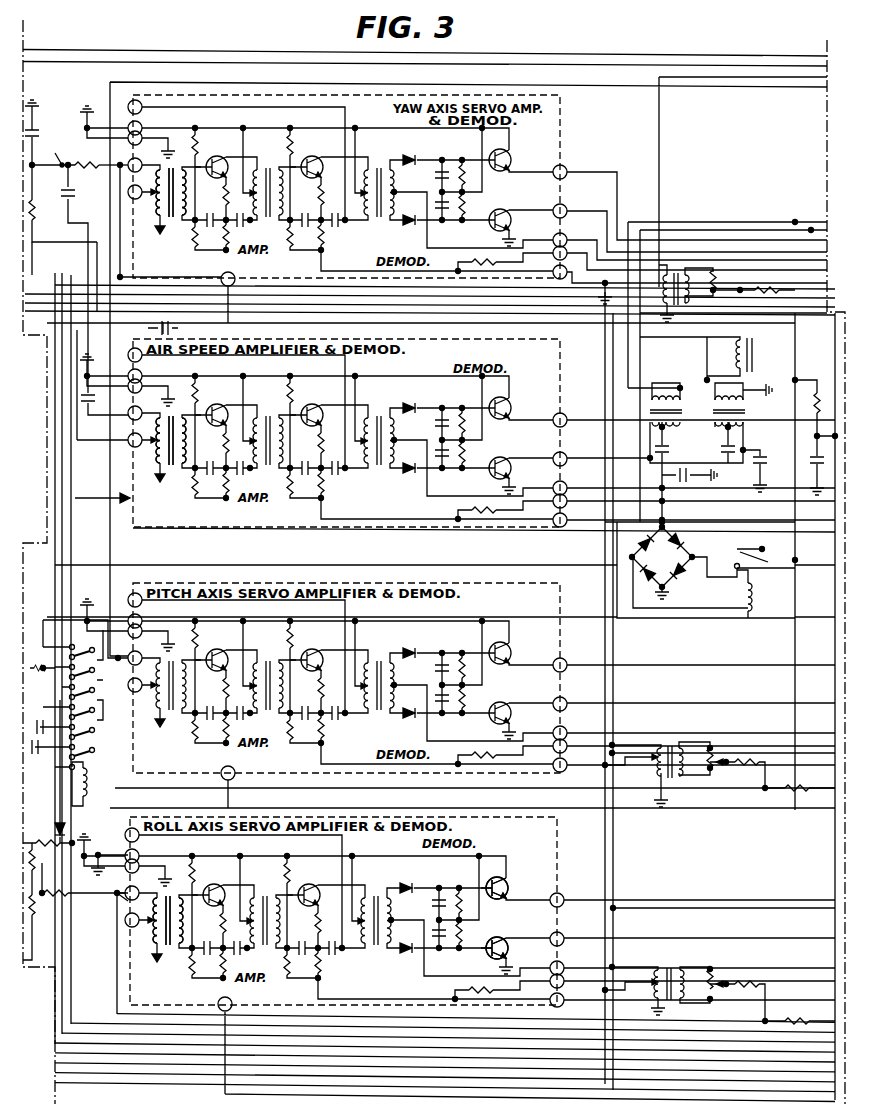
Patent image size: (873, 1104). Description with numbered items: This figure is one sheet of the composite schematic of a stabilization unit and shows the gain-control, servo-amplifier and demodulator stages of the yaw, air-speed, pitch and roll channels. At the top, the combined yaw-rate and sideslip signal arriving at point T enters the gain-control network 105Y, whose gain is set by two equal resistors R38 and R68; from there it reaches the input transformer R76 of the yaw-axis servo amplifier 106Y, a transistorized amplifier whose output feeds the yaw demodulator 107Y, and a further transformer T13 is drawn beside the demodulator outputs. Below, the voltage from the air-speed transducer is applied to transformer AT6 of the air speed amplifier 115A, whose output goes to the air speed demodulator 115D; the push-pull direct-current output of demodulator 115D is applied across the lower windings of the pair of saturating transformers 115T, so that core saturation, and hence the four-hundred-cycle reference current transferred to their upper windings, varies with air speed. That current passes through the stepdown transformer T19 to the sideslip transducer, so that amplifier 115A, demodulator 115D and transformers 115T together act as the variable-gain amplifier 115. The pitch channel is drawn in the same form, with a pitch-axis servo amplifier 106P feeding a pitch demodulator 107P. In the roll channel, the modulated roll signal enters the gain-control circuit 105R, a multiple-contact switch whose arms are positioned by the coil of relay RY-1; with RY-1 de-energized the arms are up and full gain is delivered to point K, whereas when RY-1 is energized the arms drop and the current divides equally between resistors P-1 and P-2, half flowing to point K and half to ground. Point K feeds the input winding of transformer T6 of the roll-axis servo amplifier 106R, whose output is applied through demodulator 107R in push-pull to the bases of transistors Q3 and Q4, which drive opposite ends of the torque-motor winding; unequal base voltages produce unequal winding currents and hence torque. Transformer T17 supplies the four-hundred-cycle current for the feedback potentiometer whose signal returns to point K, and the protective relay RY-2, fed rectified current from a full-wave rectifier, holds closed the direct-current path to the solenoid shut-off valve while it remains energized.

The yaw-axis servo amplifier 106Y is at (316, 189).
The yaw axis demodulator 107Y is at (465, 203).
The input transformer R76 is at (170, 185).
The resistor R68 is at (56, 201).
The resistor R38 is at (88, 162).
The point T is at (53, 155).
The gain-control network 105Y is at (91, 224).
The air speed amplifier 115A is at (316, 433).
The air speed demodulator 115D is at (465, 451).
The transformer AT6 is at (167, 434).
The variable-gain amplifier 115 is at (102, 490).
The airspeed saturating transformers 115T is at (700, 453).
The pitch axis servo amplifier 106P is at (316, 678).
The pitch axis demodulator 107P is at (465, 689).
The gain-control circuit 105R is at (100, 735).
The relay coil RY-1 is at (86, 789).
The resistor P-1 is at (76, 775).
The resistor P-2 is at (35, 901).
The roll-axis servo amplifier 106R is at (313, 913).
The demodulator 107R is at (462, 915).
The transformer T6 is at (168, 914).
The transistor Q3 is at (503, 877).
The transistor Q4 is at (507, 942).
The point K is at (113, 906).
The transformer T13 is at (727, 293).
The stepdown transformer T19 is at (711, 360).
The protective relay RY-2 is at (701, 569).
The transformer T17 is at (719, 995).